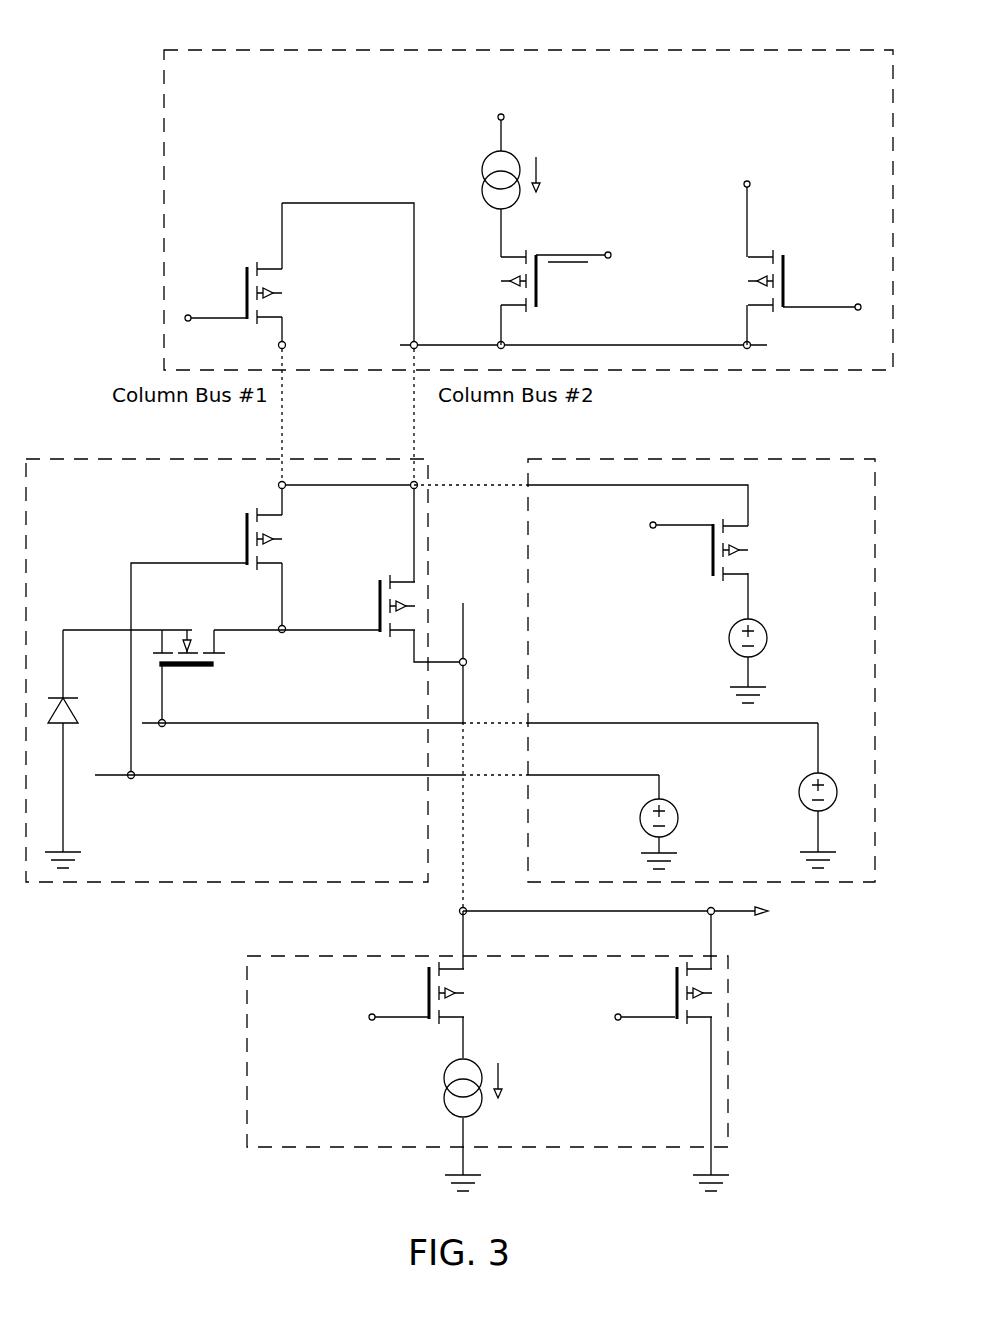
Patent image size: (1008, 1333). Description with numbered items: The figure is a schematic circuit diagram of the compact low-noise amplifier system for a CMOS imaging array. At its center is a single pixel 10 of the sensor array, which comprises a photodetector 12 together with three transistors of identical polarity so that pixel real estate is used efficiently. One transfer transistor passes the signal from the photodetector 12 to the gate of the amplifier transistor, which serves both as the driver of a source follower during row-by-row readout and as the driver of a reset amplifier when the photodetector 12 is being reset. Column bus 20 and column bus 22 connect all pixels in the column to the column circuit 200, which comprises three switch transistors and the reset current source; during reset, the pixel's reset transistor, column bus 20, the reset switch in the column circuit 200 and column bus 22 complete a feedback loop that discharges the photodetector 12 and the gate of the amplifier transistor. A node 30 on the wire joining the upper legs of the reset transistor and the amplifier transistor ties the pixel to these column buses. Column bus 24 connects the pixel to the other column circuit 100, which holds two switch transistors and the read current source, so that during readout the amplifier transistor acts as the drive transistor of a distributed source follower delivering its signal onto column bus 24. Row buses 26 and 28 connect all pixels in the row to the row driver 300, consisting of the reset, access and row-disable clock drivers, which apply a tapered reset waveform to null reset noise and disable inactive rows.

The pixel 10 is at (72, 458).
The photodetector 12 is at (72, 697).
The column bus 20 is at (278, 432).
The column bus 22 is at (415, 433).
The column bus 24 is at (467, 672).
The row bus 26 is at (355, 722).
The row bus 28 is at (340, 777).
The reset node line 30 is at (333, 490).
The column circuit 100 is at (293, 955).
The column circuit 200 is at (205, 50).
The row driver 300 is at (817, 458).